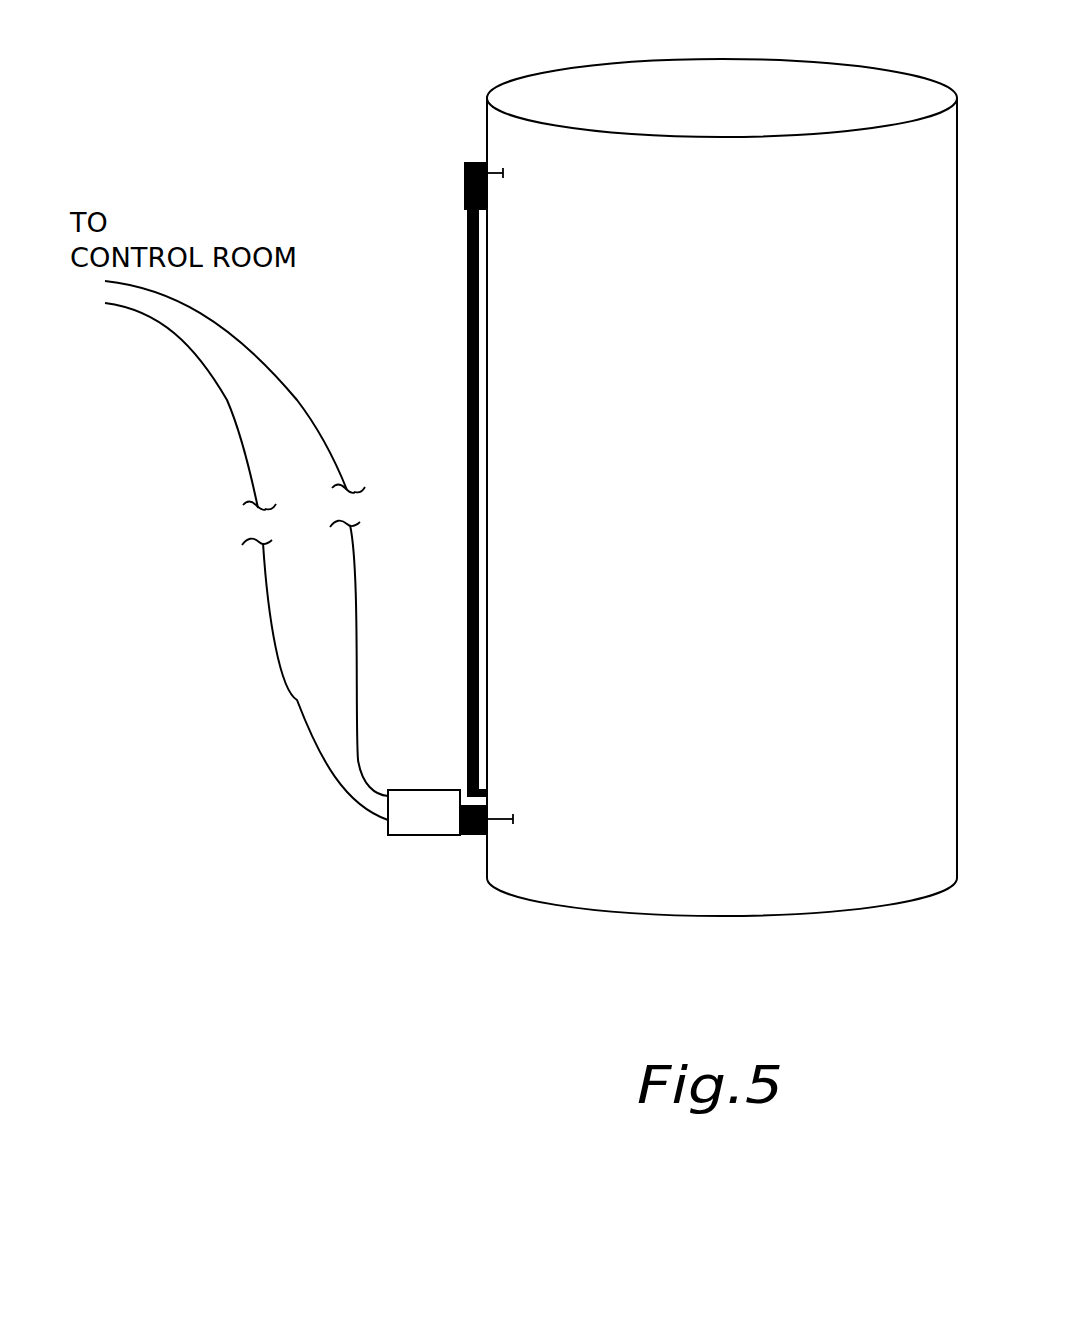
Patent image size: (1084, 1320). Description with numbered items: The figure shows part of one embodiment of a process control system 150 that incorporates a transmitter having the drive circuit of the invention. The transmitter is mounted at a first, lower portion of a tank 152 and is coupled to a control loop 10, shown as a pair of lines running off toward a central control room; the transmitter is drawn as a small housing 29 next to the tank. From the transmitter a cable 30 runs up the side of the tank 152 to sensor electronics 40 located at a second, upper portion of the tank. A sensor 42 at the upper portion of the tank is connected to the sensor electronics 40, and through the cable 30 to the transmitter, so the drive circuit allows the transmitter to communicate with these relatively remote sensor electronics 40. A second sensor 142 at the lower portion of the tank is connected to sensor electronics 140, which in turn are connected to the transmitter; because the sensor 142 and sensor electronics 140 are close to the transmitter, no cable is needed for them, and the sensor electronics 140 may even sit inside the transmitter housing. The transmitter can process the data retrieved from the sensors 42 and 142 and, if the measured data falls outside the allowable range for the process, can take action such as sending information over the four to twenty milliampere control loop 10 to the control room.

The control loop 10 is at (246, 550).
The electronics housing 29 is at (423, 800).
The cable 30 is at (464, 417).
The sensor electronics 40 is at (465, 180).
The sensor 42 is at (506, 191).
The sensor electronics 140 is at (478, 836).
The sensor 142 is at (511, 832).
The process control system 150 is at (392, 973).
The tank 152 is at (765, 583).